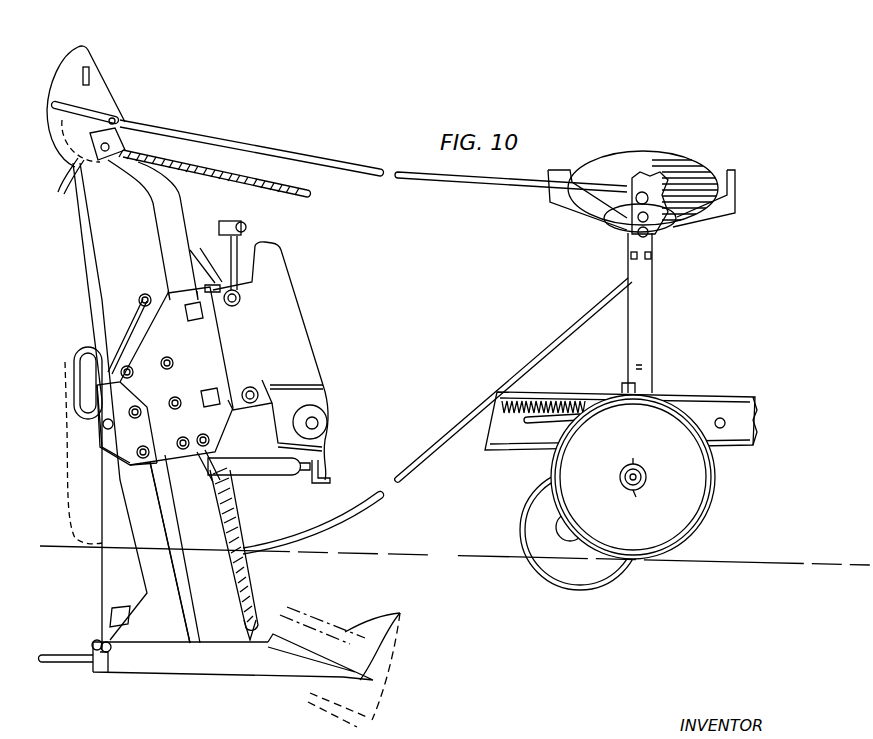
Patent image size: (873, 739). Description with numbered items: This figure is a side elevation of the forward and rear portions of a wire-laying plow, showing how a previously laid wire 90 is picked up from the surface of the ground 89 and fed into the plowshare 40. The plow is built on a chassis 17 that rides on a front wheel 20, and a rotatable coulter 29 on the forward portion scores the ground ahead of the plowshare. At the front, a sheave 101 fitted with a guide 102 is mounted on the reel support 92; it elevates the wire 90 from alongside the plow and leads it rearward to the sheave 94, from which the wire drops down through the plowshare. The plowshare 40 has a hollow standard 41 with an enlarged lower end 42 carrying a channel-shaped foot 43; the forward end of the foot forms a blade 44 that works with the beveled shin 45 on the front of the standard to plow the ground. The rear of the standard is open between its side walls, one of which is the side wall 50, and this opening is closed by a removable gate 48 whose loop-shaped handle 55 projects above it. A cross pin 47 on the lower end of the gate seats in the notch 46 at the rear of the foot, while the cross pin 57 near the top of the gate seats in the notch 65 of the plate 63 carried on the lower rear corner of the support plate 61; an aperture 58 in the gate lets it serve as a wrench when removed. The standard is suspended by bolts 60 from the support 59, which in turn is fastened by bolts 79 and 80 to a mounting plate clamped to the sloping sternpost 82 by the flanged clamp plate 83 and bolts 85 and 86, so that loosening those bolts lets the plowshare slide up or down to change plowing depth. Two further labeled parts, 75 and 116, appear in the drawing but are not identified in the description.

The chassis 17 is at (575, 390).
The front wheel 20 is at (712, 505).
The coulter 29 is at (521, 517).
The plowshare 40 is at (248, 520).
The hollow standard 41 is at (200, 507).
The enlarged lower end 42 is at (171, 660).
The foot 43 is at (246, 665).
The blade 44 is at (351, 667).
The beveled shin 45 is at (256, 588).
The notch 46 is at (92, 645).
The cross pin 47 is at (105, 672).
The removable gate 48 is at (104, 567).
The side wall 50 is at (140, 498).
The loop-shaped handle 55 is at (84, 347).
The cross pin 57 is at (112, 426).
The aperture 58 is at (110, 609).
The support 59 is at (207, 283).
The bolts 60 is at (171, 399).
The plate 61 is at (205, 342).
The plate 63 is at (115, 455).
The notch 65 is at (104, 425).
The chain 75 is at (64, 376).
The bolt 79 is at (190, 318).
The bolt 80 is at (205, 396).
The sternpost 82 is at (243, 253).
The flanged clamp plate 83 is at (255, 348).
The bolt 85 is at (241, 298).
The bolt 86 is at (258, 390).
The ground 89 is at (720, 563).
The wire 90 is at (285, 152).
The reel support 92 is at (653, 313).
The sheave 94 is at (127, 137).
The sheave 101 is at (660, 178).
The guide 102 is at (735, 172).
The spring housing 116 is at (715, 395).